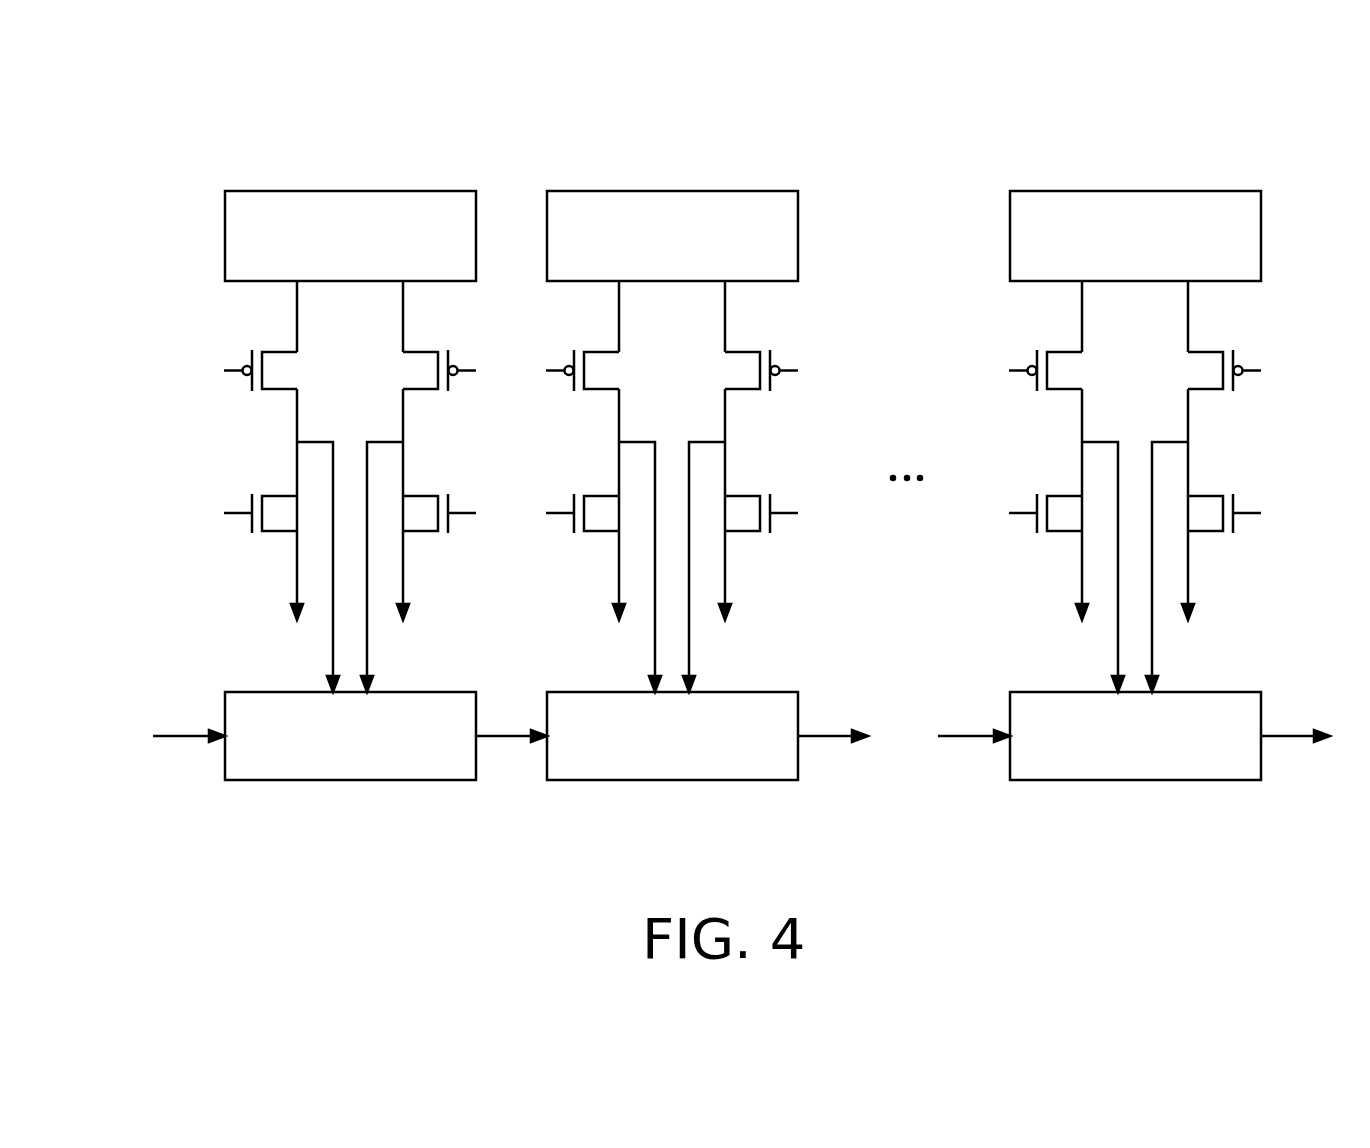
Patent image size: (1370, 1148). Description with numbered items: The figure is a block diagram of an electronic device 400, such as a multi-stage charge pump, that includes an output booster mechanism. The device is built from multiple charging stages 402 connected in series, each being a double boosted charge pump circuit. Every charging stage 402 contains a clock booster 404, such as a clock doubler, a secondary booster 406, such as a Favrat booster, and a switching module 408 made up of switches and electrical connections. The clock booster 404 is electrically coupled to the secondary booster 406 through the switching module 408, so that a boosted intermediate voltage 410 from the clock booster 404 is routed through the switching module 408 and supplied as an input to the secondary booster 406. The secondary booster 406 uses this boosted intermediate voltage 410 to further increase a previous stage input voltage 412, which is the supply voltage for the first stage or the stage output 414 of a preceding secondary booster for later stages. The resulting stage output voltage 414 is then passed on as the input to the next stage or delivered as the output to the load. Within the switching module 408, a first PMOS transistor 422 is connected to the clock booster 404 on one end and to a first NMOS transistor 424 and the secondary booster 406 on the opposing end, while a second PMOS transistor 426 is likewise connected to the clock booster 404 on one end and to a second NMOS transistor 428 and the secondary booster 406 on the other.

The electronic device 400 is at (352, 98).
The charging stage 402 is at (476, 797).
The clock booster 404 is at (460, 248).
The secondary booster 406 is at (435, 762).
The switching module 408 is at (213, 282).
The boosted intermediate voltage 410 is at (1240, 648).
The previous stage input voltage 412 is at (197, 735).
The stage output voltage 414 is at (522, 738).
The first PMOS transistor 422 is at (1062, 350).
The first NMOS transistor 424 is at (1062, 495).
The second PMOS transistor 426 is at (1208, 350).
The second NMOS transistor 428 is at (1207, 495).